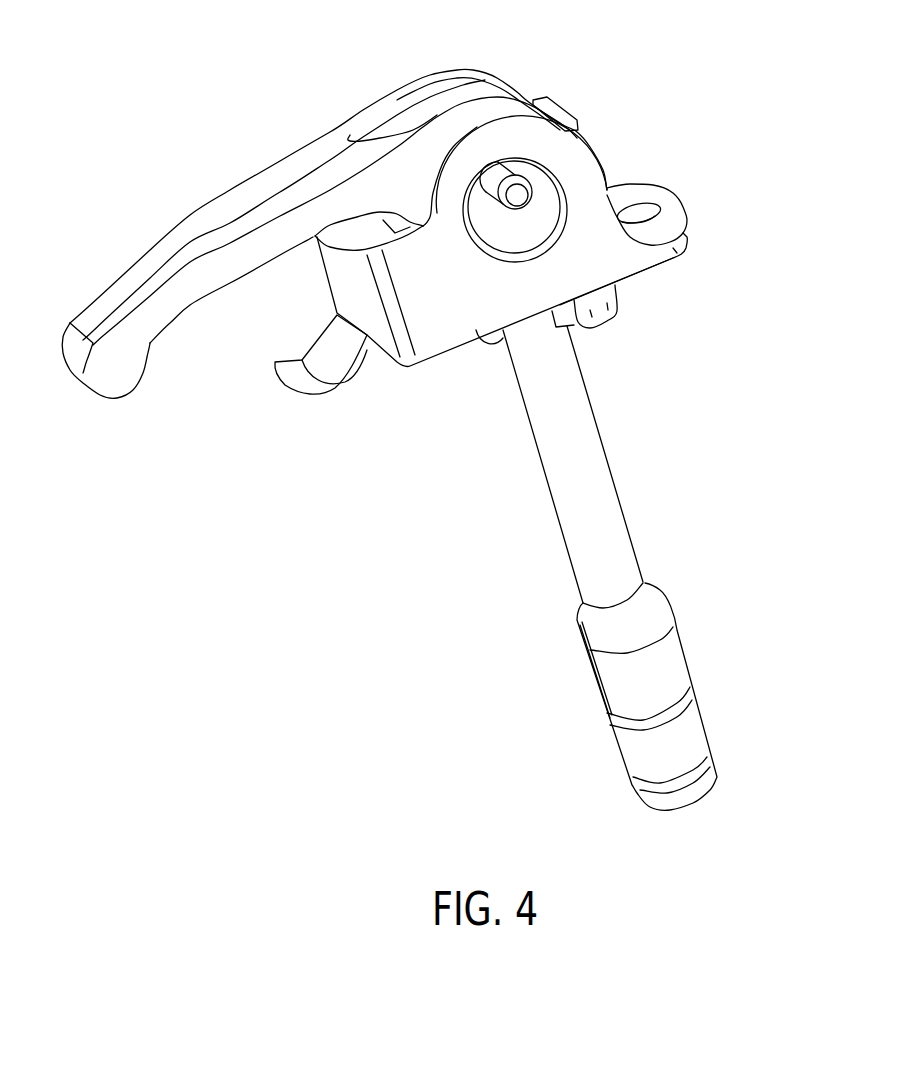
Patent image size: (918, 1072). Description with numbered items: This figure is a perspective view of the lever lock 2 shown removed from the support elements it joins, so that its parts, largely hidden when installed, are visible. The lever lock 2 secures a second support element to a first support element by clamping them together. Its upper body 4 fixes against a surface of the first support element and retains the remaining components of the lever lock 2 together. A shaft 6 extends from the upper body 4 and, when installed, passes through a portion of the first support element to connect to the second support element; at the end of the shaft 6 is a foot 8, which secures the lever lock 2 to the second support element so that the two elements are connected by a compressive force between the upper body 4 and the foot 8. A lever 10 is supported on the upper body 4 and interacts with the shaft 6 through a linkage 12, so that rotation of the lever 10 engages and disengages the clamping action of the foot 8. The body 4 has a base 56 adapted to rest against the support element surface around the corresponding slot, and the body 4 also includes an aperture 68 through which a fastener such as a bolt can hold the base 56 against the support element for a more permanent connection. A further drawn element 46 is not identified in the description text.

The lever lock 2 is at (757, 163).
The upper body 4 is at (591, 178).
The shaft 6 is at (605, 485).
The foot 8 is at (718, 767).
The lever 10 is at (193, 232).
The linkage 12 is at (635, 72).
The latch tab 46 is at (310, 393).
The base 56 is at (653, 263).
The aperture 68 is at (643, 213).